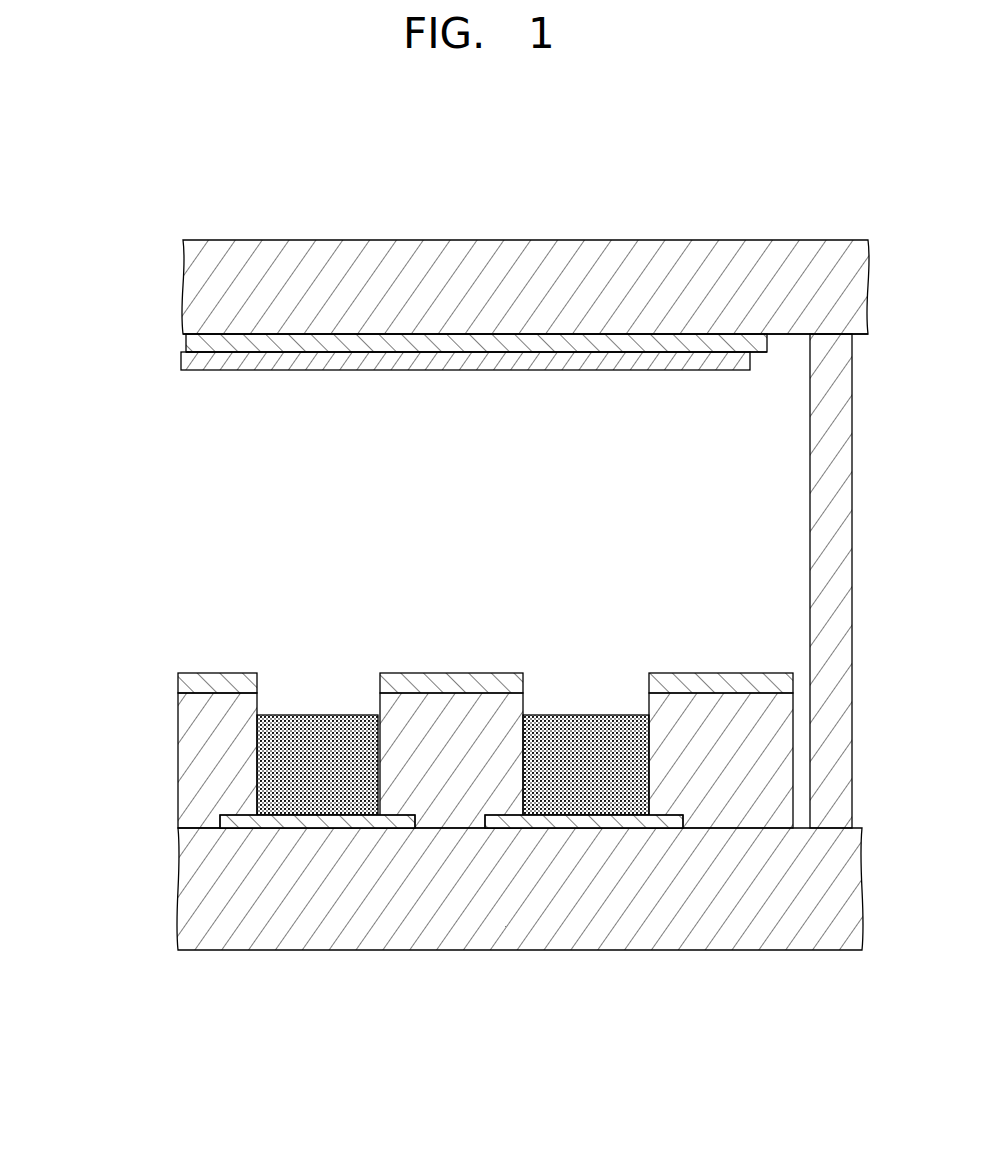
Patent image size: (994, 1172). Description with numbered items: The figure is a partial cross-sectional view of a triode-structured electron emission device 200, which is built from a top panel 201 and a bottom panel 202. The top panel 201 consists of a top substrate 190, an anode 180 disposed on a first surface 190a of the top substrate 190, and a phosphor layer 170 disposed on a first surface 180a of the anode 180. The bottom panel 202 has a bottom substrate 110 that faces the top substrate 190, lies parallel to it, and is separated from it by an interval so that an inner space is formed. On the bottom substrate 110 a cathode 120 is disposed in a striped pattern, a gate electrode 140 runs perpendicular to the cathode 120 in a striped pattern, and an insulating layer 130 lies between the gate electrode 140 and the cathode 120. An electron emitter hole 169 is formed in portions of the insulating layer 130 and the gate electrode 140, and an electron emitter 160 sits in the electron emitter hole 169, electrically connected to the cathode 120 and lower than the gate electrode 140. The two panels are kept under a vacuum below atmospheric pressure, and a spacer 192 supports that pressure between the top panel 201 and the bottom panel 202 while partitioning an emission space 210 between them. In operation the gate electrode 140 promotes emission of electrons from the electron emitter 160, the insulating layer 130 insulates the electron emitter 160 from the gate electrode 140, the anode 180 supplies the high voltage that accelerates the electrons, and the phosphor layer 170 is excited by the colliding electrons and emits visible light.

The bottom substrate 110 is at (192, 868).
The cathode 120 is at (190, 826).
The insulating layer 130 is at (182, 760).
The gate electrode 140 is at (178, 680).
The electron emitter 160 is at (317, 815).
The electron emitter hole 169 is at (453, 691).
The phosphor layer 170 is at (556, 360).
The anode 180 is at (418, 344).
The first surface of the anode 180a is at (490, 352).
The top substrate 190 is at (270, 258).
The first surface of the top substrate 190a is at (343, 334).
The spacer 192 is at (843, 583).
The electron emission device 200 is at (91, 427).
The top panel 201 is at (152, 354).
The bottom panel 202 is at (158, 652).
The emission space 210 is at (526, 518).